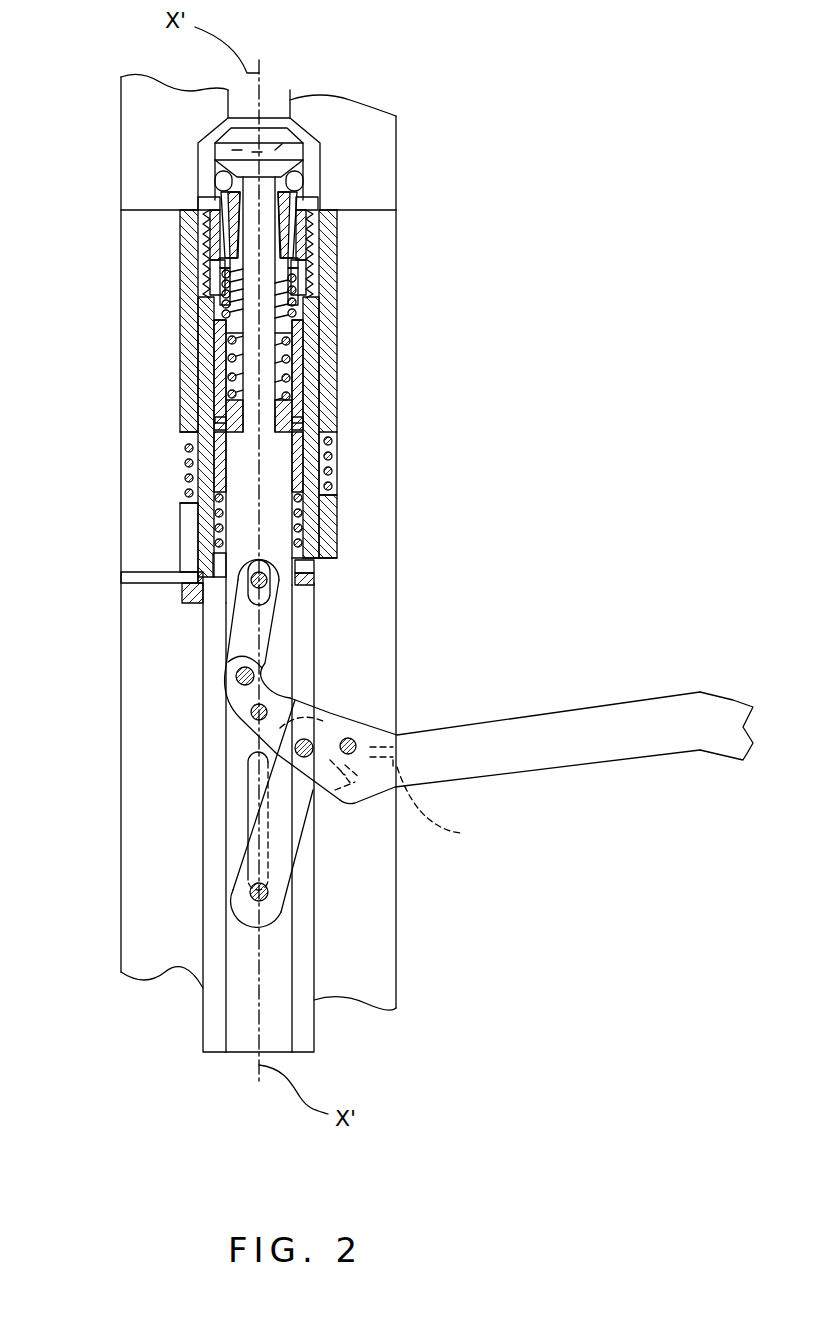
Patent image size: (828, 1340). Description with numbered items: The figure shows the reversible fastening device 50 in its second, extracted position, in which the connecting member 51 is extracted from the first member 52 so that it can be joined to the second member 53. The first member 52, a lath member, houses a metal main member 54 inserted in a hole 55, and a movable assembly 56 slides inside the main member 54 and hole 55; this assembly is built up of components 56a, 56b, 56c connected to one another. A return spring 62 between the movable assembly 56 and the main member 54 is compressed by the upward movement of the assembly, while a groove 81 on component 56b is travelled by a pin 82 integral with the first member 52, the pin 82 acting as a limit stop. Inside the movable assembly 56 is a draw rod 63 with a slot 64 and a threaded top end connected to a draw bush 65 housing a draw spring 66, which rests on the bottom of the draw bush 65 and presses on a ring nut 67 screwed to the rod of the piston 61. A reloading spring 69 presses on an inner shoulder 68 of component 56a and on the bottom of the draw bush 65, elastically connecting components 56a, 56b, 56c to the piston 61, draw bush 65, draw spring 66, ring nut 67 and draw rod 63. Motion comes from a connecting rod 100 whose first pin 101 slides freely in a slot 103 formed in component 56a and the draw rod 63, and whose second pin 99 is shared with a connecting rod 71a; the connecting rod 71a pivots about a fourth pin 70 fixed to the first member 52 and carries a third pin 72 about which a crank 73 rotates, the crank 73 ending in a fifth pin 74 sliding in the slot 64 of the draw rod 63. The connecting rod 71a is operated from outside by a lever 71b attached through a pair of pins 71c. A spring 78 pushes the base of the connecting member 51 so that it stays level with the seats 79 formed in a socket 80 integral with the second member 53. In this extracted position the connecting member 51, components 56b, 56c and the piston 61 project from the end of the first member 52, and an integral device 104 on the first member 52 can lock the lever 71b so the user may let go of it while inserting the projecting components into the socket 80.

The reversible fastening device 50 is at (552, 582).
The connecting member 51 is at (283, 263).
The first member 52 is at (356, 540).
The second member 53 is at (163, 93).
The main member 54 is at (190, 212).
The hole 55 is at (187, 270).
The movable assembly 56 is at (164, 508).
The component of movable assembly 56a is at (228, 678).
The component of movable assembly 56b is at (198, 583).
The component of movable assembly 56c is at (233, 237).
The piston 61 is at (272, 327).
The return spring 62 is at (182, 497).
The draw rod 63 is at (213, 660).
The slot 64 is at (250, 850).
The draw bush 65 is at (204, 393).
The draw spring 66 is at (290, 363).
The ring nut 67 is at (282, 408).
The inner shoulder 68 is at (212, 556).
The reloading spring 69 is at (177, 465).
The fourth pin 70 is at (262, 742).
The connecting rod 71a is at (240, 800).
The lever 71b is at (632, 738).
The pins 71c is at (394, 783).
The third pin 72 is at (322, 718).
The crank 73 is at (283, 832).
The fifth pin 74 is at (270, 898).
The spring 78 is at (225, 310).
The seats 79 is at (213, 180).
The socket 80 is at (308, 157).
The groove 81 is at (193, 537).
The pin 82 is at (152, 581).
The second pin 99 is at (260, 728).
The connecting rod 100 is at (240, 623).
The first pin 101 is at (266, 582).
The slot 103 is at (270, 598).
The integral device 104 is at (350, 746).